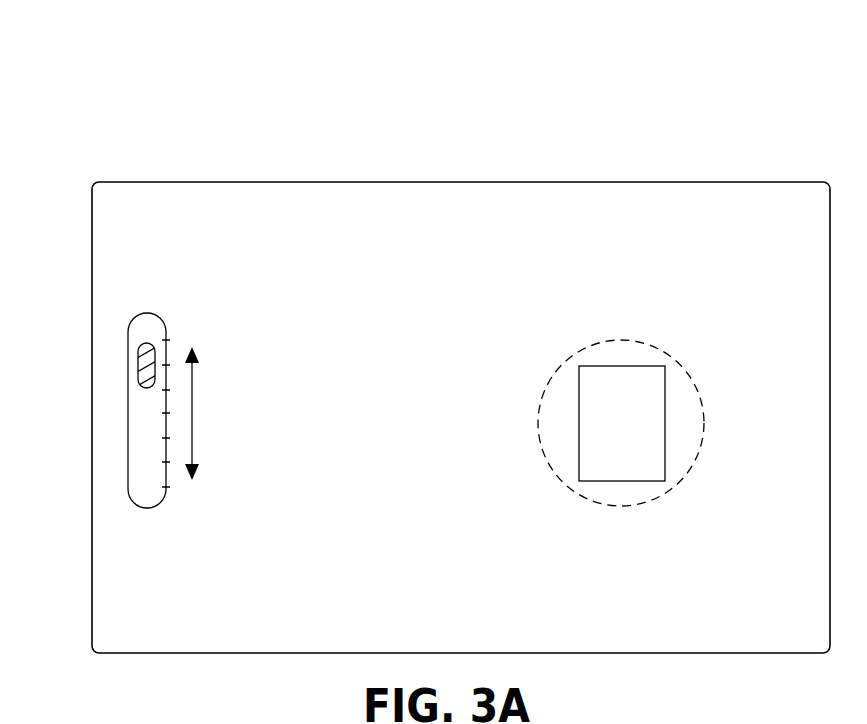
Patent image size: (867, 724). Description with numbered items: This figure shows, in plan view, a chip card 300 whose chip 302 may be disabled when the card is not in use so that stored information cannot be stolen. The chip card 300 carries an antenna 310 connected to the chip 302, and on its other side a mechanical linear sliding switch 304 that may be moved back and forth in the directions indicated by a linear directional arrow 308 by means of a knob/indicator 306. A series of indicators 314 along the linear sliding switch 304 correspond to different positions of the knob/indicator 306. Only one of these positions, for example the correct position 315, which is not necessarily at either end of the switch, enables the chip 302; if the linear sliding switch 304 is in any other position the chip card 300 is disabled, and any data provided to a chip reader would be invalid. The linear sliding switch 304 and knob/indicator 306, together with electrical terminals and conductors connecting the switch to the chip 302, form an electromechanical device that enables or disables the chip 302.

The chip card 300 is at (104, 124).
The chip 302 is at (622, 366).
The mechanical linear sliding switch 304 is at (152, 313).
The knob/indicator 306 is at (138, 368).
The linear directional arrow 308 is at (192, 412).
The antenna 310 is at (703, 407).
The indicators 314 is at (166, 340).
The correct position 315 is at (166, 462).